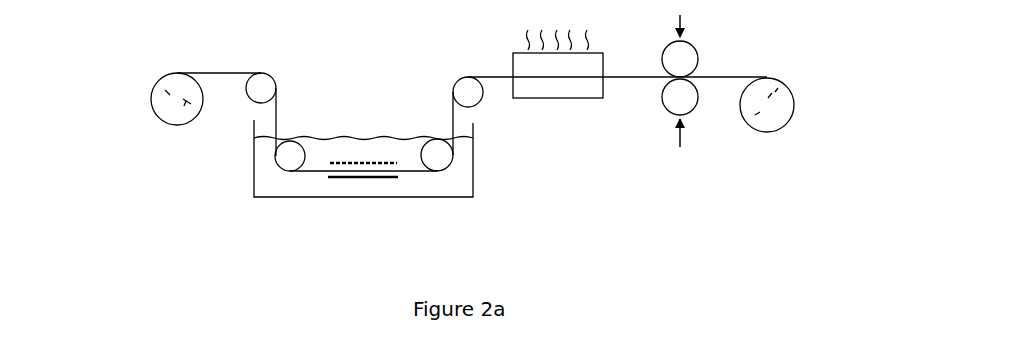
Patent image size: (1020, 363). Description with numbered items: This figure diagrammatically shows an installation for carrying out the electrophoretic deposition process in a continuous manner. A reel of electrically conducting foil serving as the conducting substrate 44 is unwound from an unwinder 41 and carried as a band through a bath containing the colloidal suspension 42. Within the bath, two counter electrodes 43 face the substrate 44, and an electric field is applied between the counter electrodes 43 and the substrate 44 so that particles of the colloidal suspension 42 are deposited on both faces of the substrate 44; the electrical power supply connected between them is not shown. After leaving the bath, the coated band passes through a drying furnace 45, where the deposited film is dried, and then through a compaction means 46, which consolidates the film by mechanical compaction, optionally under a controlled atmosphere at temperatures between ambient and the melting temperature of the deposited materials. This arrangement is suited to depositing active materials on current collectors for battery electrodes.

The unwinder 41 is at (144, 112).
The colloidal suspension 42 is at (309, 195).
The counter electrodes 43 is at (364, 181).
The conducting substrate 44 is at (422, 174).
The drying furnace 45 is at (562, 101).
The compaction means 46 is at (680, 101).